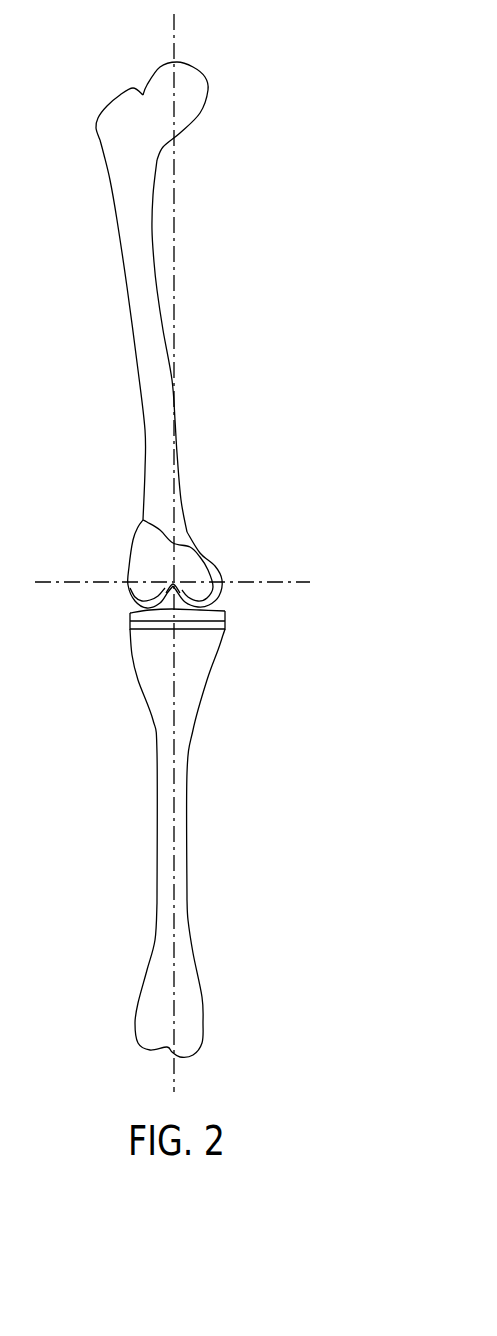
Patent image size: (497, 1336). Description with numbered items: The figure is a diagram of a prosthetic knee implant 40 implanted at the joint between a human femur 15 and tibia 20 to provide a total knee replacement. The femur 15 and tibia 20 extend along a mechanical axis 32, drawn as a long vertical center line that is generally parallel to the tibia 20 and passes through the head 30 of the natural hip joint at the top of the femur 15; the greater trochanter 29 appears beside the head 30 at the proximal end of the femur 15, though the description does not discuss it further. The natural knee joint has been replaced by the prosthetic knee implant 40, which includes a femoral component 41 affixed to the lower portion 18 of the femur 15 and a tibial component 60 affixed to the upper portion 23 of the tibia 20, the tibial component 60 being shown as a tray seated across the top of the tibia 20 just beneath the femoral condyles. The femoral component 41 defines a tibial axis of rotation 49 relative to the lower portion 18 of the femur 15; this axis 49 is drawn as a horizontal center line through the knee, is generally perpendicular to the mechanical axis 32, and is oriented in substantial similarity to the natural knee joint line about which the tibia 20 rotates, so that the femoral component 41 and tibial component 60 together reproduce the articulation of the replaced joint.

The femur 15 is at (135, 287).
The lower portion of the femur 18 is at (222, 570).
The tibia 20 is at (183, 813).
The upper portion of the tibia 23 is at (217, 646).
The greater trochanter 29 is at (100, 130).
The head 30 is at (200, 92).
The mechanical axis 32 is at (174, 36).
The prosthetic knee implant 40 is at (96, 604).
The femoral component 41 is at (186, 536).
The tibial axis of rotation 49 is at (295, 580).
The tibial component 60 is at (240, 618).